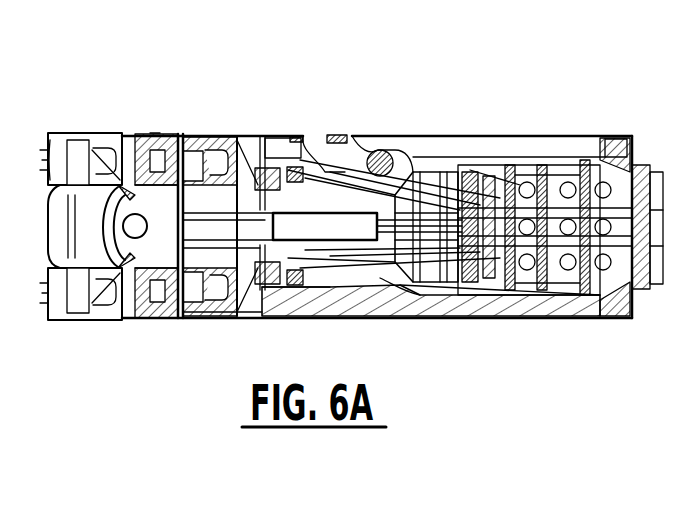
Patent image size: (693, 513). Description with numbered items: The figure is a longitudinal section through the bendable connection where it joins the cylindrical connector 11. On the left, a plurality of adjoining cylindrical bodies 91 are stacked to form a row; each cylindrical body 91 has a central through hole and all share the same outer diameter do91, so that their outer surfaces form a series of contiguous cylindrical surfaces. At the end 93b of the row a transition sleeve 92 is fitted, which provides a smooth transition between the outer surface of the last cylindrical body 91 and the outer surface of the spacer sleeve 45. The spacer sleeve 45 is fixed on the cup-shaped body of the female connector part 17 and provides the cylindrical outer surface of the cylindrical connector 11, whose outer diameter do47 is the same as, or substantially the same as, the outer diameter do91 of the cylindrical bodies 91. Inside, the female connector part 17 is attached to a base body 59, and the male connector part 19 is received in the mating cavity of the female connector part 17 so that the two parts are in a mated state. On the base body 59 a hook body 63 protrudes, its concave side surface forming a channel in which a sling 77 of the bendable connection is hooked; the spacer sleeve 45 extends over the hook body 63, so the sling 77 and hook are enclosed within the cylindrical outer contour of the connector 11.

The cylindrical connector 11 is at (544, 400).
The female connector part 17 is at (507, 372).
The male connector part 19 is at (548, 210).
The spacer sleeve 45 is at (484, 318).
The base body 59 is at (317, 192).
The hook body 63 is at (358, 175).
The sling 77 is at (412, 150).
The cylindrical body 91 is at (116, 318).
The transition sleeve 92 is at (244, 320).
The end of the row 93b is at (88, 105).
The outer diameter of the cylindrical bodies do91 is at (155, 120).
The outer diameter of the cylindrical outer surface do47 is at (590, 334).